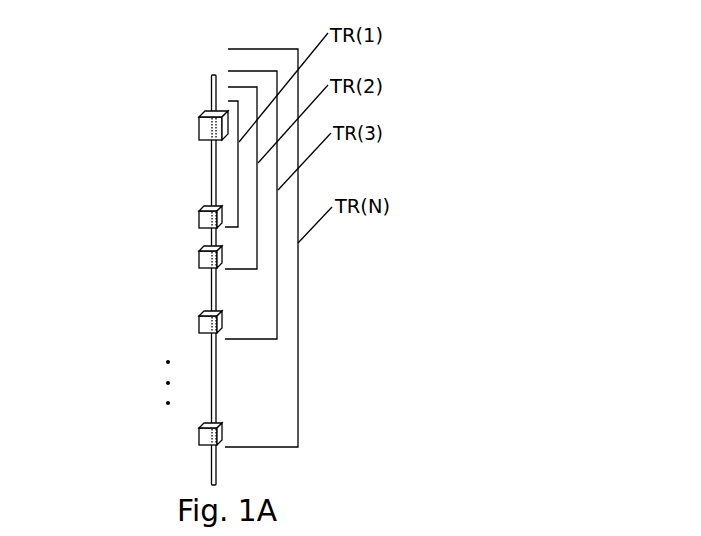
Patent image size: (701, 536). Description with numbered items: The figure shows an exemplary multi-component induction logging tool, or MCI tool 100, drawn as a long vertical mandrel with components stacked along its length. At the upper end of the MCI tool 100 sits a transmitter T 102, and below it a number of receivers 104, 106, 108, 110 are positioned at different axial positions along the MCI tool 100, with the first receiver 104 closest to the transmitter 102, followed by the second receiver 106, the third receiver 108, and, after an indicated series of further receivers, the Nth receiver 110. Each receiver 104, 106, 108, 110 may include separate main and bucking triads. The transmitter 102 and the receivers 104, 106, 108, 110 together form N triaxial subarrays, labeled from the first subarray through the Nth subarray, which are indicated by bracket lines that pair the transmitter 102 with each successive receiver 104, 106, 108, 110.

The MCI logging tool 100 is at (214, 57).
The transmitter T 102 is at (170, 130).
The receiver R(1) 104 is at (148, 212).
The receiver R(2) 106 is at (148, 253).
The receiver R(3) 108 is at (148, 322).
The receiver R(N) 110 is at (148, 433).